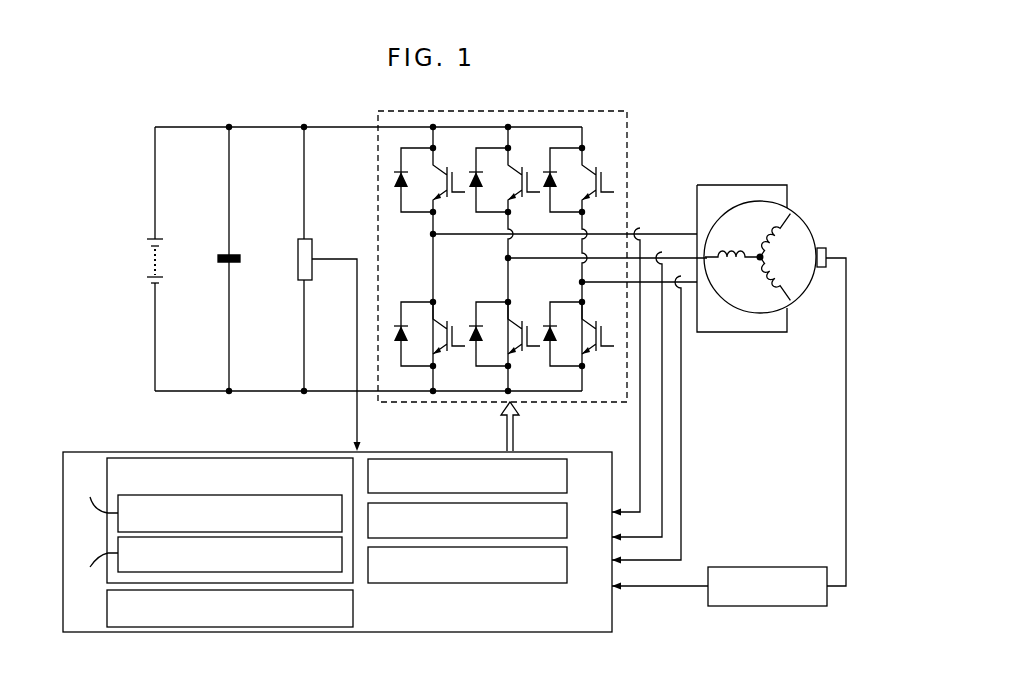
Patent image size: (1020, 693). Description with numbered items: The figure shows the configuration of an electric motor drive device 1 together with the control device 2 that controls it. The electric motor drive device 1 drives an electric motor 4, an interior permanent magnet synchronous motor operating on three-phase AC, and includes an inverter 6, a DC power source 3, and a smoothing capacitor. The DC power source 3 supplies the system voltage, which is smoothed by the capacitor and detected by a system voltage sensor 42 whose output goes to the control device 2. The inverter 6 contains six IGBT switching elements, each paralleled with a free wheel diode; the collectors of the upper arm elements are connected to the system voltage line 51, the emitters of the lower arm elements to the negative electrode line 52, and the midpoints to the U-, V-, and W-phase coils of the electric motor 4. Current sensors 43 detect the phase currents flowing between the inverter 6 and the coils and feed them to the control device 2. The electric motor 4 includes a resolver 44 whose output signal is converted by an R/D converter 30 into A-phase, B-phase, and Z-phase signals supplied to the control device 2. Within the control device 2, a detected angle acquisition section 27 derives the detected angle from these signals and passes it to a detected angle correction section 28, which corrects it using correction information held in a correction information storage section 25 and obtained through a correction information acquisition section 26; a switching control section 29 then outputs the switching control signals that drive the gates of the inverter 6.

The electric motor drive device 1 is at (144, 126).
The control device 2 is at (63, 500).
The DC power source 3 is at (160, 237).
The electric motor 4 is at (800, 220).
The inverter 6 is at (500, 110).
The correction information storage section 25 is at (230, 458).
The correction information acquisition section 26 is at (353, 608).
The detected angle acquisition section 27 is at (567, 488).
The detected angle correction section 28 is at (567, 520).
The switching control section 29 is at (465, 583).
The R/D converter 30 is at (769, 567).
The system voltage sensor 42 is at (301, 239).
The current sensors 43 is at (662, 239).
The resolver 44 is at (823, 248).
The system voltage line 51 is at (353, 127).
The negative electrode line 52 is at (322, 391).